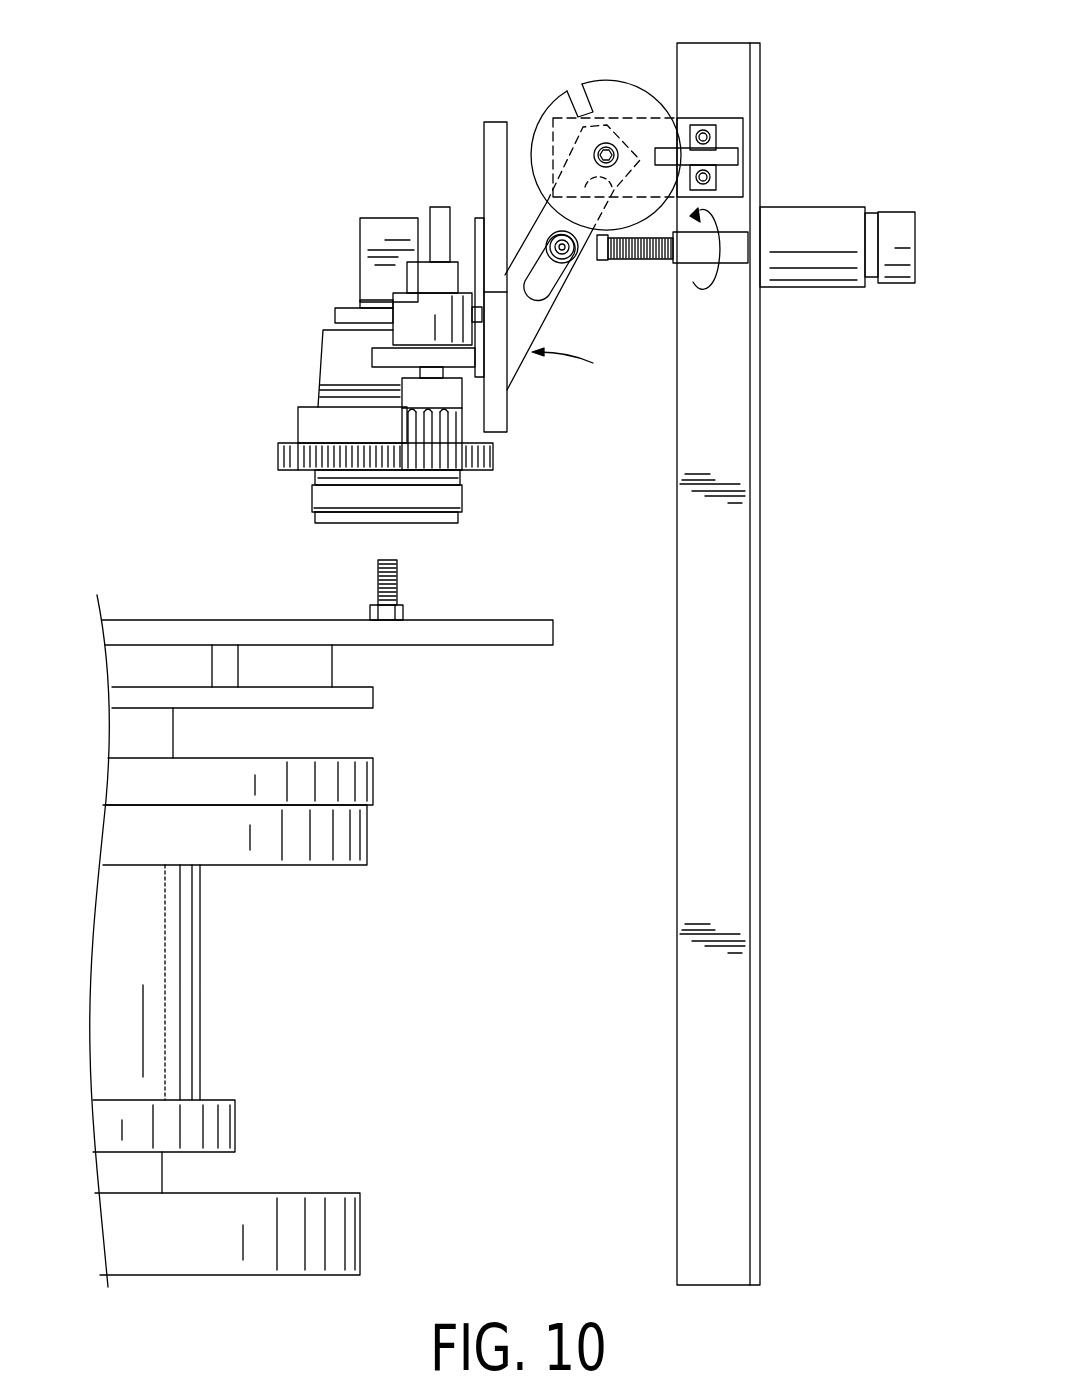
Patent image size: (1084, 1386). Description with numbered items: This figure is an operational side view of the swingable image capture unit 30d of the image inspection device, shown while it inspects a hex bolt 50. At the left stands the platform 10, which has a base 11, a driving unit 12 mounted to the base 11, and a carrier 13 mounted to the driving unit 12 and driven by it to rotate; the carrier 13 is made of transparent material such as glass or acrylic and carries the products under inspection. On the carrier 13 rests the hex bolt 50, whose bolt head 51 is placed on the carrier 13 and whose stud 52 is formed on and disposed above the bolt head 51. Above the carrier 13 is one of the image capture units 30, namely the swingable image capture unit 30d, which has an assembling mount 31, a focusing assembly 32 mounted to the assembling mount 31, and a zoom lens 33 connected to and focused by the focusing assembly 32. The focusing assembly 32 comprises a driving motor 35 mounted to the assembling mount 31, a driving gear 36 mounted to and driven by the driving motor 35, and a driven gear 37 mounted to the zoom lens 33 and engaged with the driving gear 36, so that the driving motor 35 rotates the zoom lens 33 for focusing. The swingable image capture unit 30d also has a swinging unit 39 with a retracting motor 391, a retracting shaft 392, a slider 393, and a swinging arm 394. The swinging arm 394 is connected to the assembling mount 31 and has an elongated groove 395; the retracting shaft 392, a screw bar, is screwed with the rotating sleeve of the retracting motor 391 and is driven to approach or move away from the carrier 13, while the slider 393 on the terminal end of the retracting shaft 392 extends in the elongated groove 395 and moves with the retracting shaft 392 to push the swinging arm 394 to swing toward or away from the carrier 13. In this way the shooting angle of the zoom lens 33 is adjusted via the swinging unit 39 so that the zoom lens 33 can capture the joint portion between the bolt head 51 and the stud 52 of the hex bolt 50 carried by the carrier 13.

The platform 10 is at (348, 1040).
The base 11 is at (288, 1222).
The driving unit 12 is at (165, 1000).
The carrier 13 is at (245, 630).
The image capture unit 30 is at (616, 64).
The swingable image capture unit 30d is at (342, 232).
The assembling mount 31 is at (493, 162).
The focusing assembly 32 is at (387, 335).
The zoom lens 33 is at (332, 497).
The driving motor 35 is at (415, 313).
The driving gear 36 is at (450, 435).
The driven gear 37 is at (300, 455).
The swinging unit 39 is at (833, 187).
The retracting motor 391 is at (817, 265).
The retracting shaft 392 is at (645, 252).
The slider 393 is at (565, 254).
The swinging arm 394 is at (515, 347).
The elongated groove 395 is at (543, 280).
The hex bolt 50 is at (392, 571).
The bolt head 51 is at (398, 612).
The stud 52 is at (385, 585).